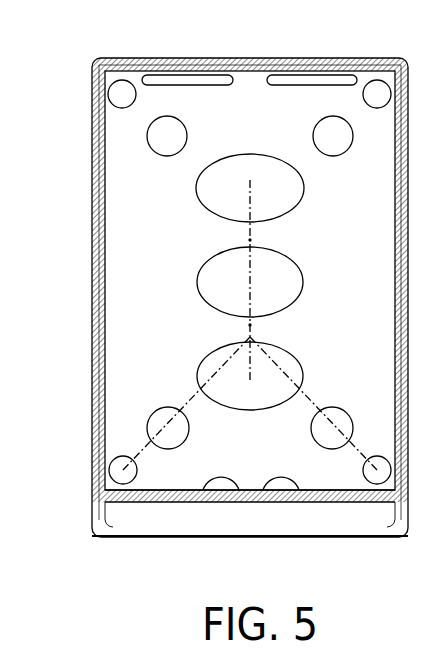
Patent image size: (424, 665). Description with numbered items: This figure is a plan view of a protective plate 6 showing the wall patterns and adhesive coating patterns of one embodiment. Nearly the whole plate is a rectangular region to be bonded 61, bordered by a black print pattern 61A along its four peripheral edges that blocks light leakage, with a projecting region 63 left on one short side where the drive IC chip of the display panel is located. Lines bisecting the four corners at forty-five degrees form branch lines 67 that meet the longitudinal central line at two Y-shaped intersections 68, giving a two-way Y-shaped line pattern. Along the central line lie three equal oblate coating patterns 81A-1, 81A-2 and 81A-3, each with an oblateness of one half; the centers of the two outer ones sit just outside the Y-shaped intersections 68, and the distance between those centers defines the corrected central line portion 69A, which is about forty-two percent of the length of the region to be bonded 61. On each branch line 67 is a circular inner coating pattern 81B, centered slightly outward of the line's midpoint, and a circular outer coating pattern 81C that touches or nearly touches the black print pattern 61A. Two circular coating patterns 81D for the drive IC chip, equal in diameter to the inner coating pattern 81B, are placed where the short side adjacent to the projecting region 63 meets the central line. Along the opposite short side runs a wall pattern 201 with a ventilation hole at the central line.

The protective plate 6 is at (64, 102).
The region to be bonded 61 is at (91, 266).
The black print pattern 61A is at (140, 512).
The projecting region 63 is at (252, 538).
The branch lines 67 is at (190, 398).
The Y-shaped intersections 68 is at (248, 240).
The corrected central line portion 69A is at (250, 283).
The coating pattern 81A-1 is at (301, 171).
The coating pattern 81A-2 is at (302, 263).
The coating pattern 81A-3 is at (302, 356).
The inner coating pattern 81B is at (189, 428).
The outer coating pattern 81C is at (137, 468).
The coating pattern for the drive IC chip 81D is at (286, 473).
The wall pattern 201 is at (282, 58).